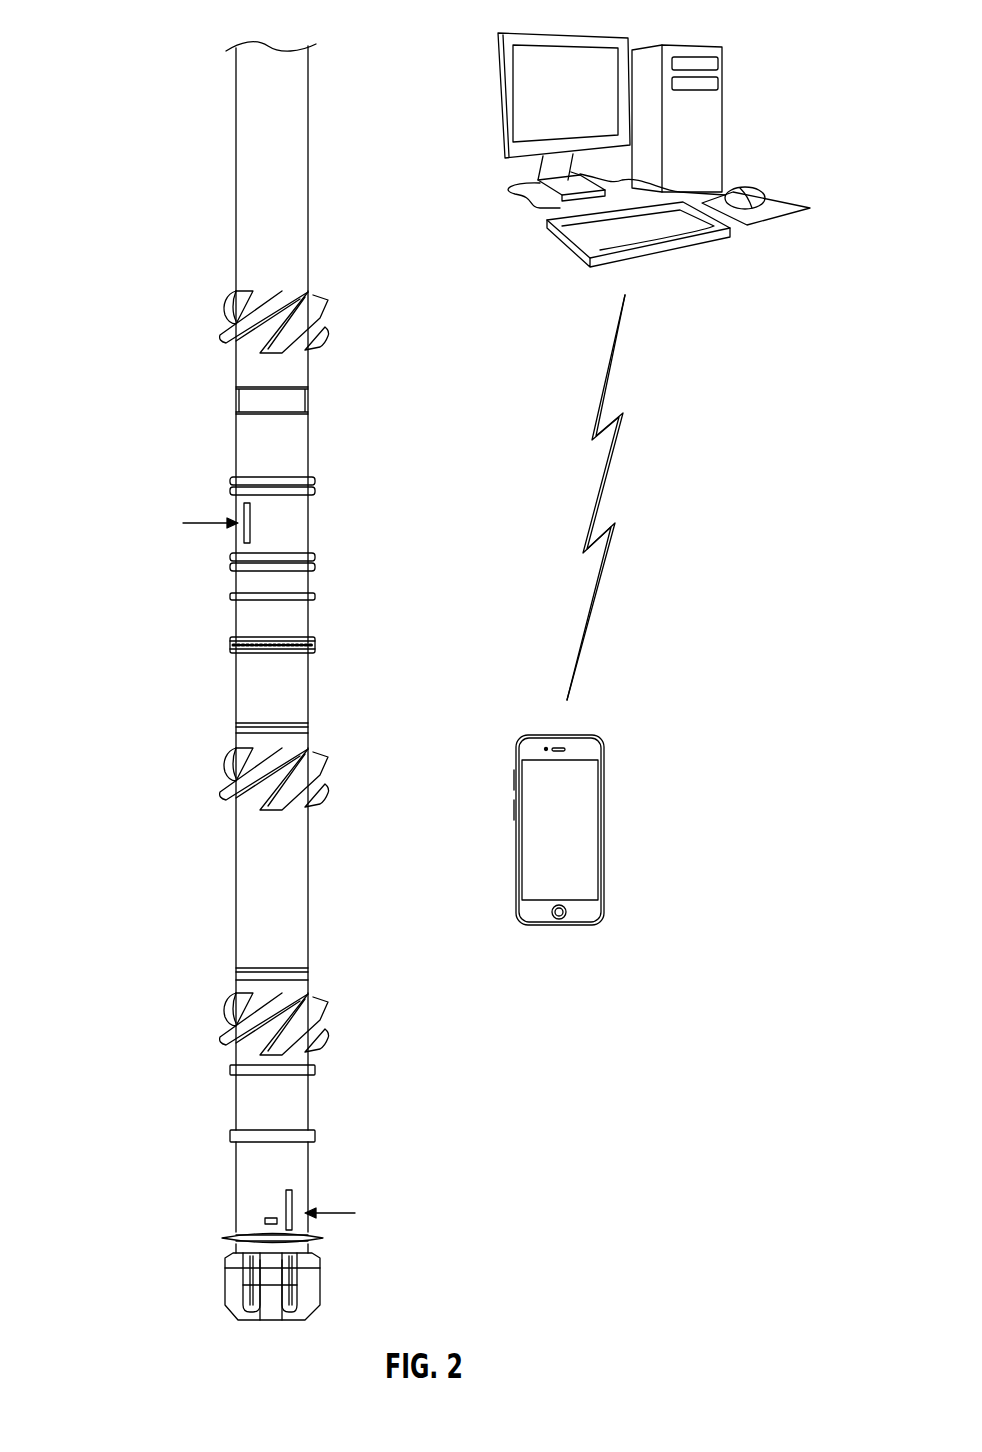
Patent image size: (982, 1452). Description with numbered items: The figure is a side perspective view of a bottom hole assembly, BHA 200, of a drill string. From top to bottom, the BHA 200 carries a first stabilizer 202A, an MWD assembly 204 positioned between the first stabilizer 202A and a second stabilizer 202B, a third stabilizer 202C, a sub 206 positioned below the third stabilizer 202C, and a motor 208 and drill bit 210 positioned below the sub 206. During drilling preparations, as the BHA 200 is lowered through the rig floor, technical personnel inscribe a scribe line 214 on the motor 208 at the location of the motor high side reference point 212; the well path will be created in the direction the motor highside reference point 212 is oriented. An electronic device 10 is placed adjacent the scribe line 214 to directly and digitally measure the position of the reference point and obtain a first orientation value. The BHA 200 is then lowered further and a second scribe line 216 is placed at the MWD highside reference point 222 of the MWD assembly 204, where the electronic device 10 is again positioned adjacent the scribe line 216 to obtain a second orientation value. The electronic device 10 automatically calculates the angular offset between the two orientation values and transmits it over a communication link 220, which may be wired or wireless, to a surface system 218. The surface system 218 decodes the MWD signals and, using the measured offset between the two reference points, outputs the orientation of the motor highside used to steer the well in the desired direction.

The BHA 200 is at (140, 39).
The stabilizer 202A is at (225, 303).
The stabilizer 202B is at (225, 760).
The stabilizer 202C is at (225, 1005).
The MWD assembly 204 is at (323, 387).
The sub 206 is at (236, 1098).
The motor 208 is at (236, 1186).
The drill bit 210 is at (225, 1288).
The motor high side reference point 212 is at (342, 1217).
The scribe line 214 is at (293, 1200).
The scribe line 216 is at (241, 512).
The surface system 218 is at (727, 95).
The communication link 220 is at (600, 625).
The MWD highside reference point 222 is at (202, 527).
The electronic device 10 is at (604, 879).